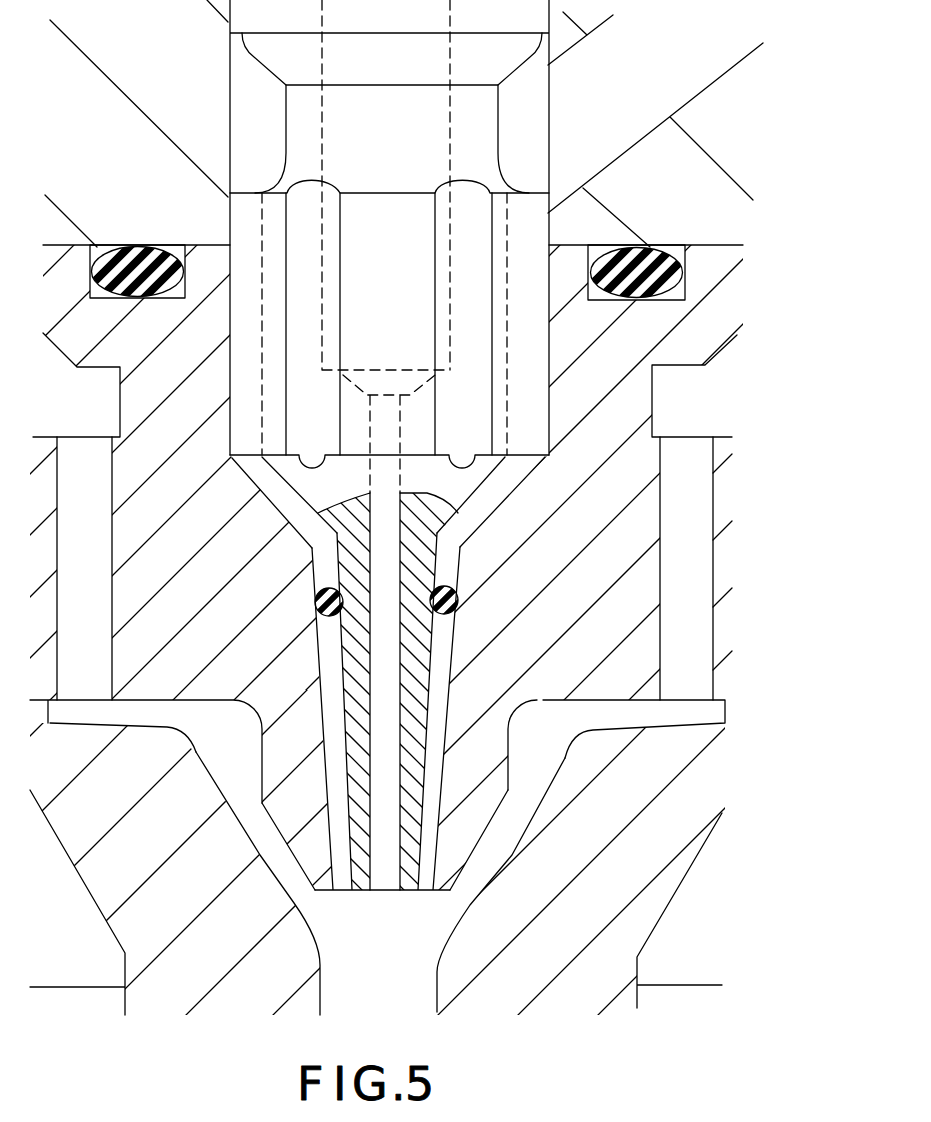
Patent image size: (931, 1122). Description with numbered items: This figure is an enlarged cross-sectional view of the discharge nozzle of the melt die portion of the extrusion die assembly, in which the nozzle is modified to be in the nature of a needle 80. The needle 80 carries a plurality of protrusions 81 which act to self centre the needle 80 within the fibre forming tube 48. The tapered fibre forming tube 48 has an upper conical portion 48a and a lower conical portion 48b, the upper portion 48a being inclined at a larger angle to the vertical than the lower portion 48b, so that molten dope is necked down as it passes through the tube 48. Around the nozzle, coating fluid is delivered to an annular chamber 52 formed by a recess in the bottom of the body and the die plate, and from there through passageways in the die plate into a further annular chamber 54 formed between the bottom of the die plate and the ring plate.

The fibre forming tube 48 is at (483, 503).
The upper conical portion 48a is at (288, 503).
The lower conical portion 48b is at (225, 828).
The annular chamber 52 is at (98, 400).
The annular chamber 54 is at (223, 748).
The needle 80 is at (422, 653).
The protrusions 81 is at (317, 608).